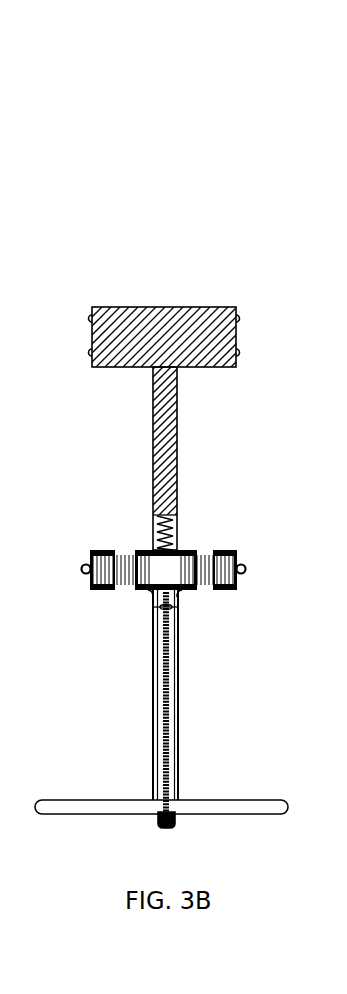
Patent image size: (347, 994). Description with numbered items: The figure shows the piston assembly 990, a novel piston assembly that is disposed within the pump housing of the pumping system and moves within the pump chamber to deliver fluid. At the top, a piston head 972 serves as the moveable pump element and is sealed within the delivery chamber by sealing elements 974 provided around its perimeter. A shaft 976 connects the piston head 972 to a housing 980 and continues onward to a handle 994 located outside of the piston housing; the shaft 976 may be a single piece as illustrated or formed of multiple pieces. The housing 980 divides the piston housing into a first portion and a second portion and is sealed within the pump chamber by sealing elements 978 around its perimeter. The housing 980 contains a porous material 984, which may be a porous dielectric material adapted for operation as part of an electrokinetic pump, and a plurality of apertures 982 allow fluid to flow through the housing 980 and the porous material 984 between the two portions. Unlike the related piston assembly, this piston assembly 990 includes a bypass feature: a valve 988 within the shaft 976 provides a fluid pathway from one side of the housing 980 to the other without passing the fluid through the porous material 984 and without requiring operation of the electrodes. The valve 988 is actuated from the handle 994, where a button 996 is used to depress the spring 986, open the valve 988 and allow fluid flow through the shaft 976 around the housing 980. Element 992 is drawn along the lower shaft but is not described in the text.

The piston assembly 990 is at (190, 285).
The piston head 972 is at (128, 322).
The sealing elements 974 is at (236, 318).
The shaft 976 is at (178, 412).
The spring 986 is at (178, 525).
The porous material 984 is at (203, 557).
The sealing elements 978 is at (246, 569).
The apertures 982 is at (207, 590).
The housing 980 is at (186, 592).
The valve 988 is at (155, 612).
The inner rod 992 is at (163, 682).
The handle 994 is at (268, 803).
The button 996 is at (162, 827).